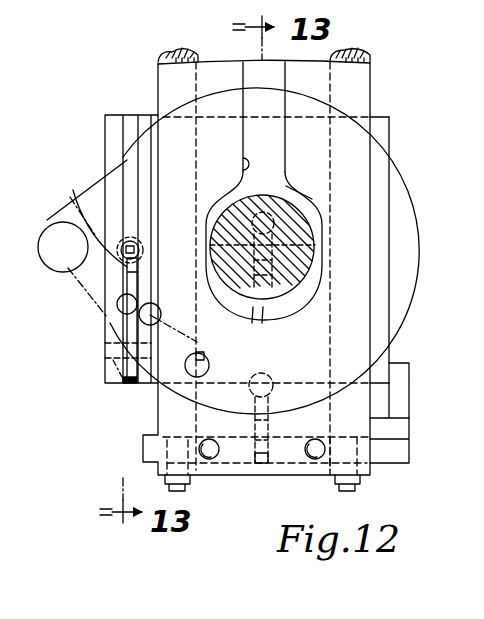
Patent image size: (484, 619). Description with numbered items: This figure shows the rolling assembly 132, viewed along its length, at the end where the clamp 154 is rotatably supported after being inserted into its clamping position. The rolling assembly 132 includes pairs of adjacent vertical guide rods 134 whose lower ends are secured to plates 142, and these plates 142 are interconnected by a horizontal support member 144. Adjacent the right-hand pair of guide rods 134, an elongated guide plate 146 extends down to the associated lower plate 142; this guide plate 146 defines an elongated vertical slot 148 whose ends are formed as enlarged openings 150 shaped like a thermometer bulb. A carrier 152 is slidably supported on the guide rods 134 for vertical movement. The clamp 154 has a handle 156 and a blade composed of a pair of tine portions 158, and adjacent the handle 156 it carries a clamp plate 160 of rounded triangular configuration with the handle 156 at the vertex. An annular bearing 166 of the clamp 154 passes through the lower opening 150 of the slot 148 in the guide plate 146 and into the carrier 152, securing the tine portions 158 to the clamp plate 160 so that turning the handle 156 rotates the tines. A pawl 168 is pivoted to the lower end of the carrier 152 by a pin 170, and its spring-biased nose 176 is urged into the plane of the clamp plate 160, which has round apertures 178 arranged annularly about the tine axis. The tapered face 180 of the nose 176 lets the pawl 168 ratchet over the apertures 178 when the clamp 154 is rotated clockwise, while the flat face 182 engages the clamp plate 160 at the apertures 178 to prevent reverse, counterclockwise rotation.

The rolling assembly 132 is at (375, 73).
The vertical guide rods 134 is at (160, 60).
The plates 142 is at (383, 453).
The horizontal support member 144 is at (399, 391).
The guide plate 146 is at (319, 84).
The vertical slot 148 is at (240, 163).
The enlarged openings 150 is at (208, 214).
The carrier 152 is at (382, 133).
The clamp 154 is at (308, 204).
The handle 156 is at (113, 251).
The tine portions 158 is at (267, 328).
The clamp plate 160 is at (421, 262).
The annular bearing 166 is at (284, 187).
The pawl 168 is at (120, 308).
The pin 170 is at (108, 384).
The pawl nose 176 is at (95, 213).
The round apertures 178 is at (203, 353).
The tapered face 180 is at (135, 265).
The flat face 182 is at (143, 243).